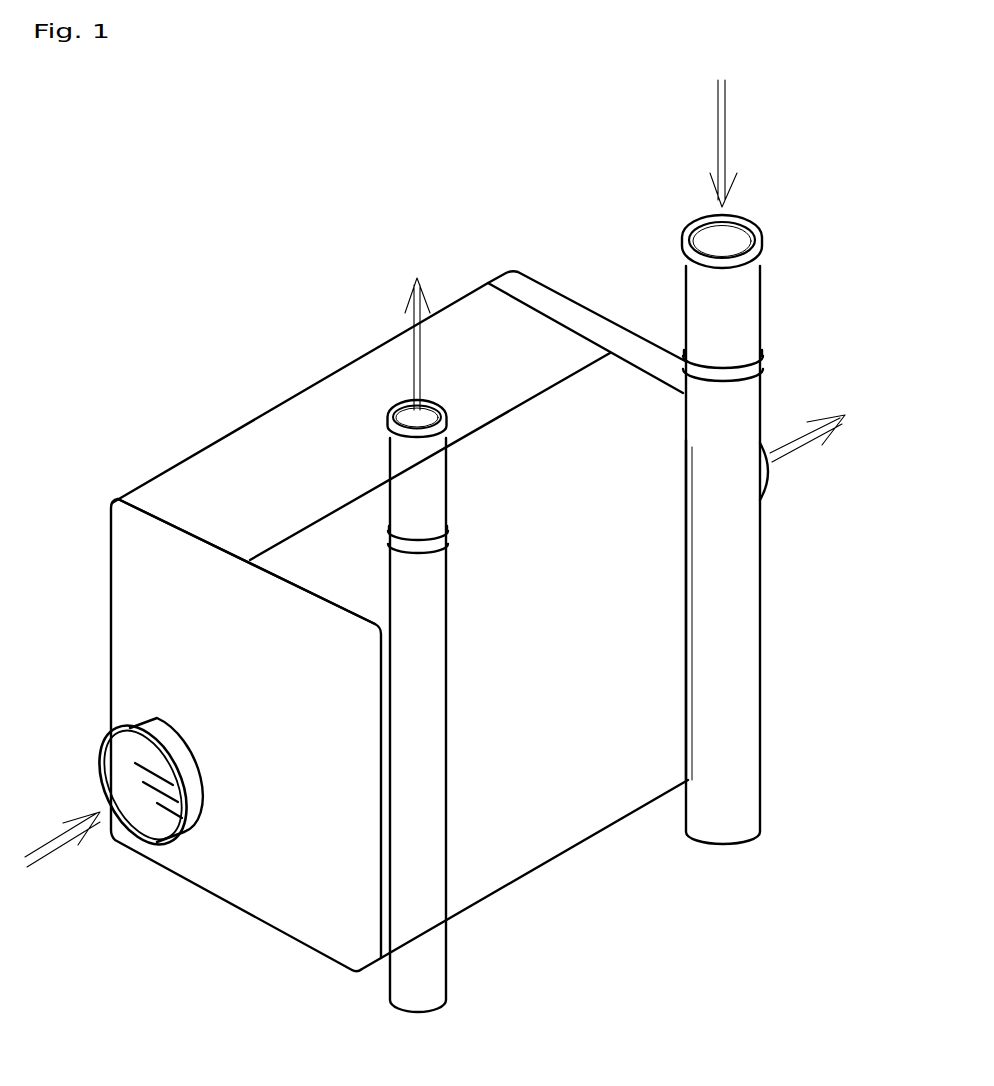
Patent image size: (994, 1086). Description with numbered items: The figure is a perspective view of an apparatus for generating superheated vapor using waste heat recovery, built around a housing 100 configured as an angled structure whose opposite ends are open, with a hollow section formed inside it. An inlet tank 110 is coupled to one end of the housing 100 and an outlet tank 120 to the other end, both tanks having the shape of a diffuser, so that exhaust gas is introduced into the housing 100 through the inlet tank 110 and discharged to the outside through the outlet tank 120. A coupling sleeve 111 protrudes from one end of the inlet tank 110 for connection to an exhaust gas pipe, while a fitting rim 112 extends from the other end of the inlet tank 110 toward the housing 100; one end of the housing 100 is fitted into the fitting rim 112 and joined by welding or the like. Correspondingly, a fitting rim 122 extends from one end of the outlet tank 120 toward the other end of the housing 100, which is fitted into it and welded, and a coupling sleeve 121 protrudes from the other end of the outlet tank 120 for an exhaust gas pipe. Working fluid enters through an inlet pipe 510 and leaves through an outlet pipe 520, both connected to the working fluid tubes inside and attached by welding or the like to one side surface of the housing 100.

The housing 100 is at (327, 371).
The inlet tank 110 is at (214, 905).
The coupling sleeve 111 is at (141, 720).
The fitting rim 112 is at (172, 515).
The outlet tank 120 is at (602, 311).
The coupling sleeve 121 is at (768, 474).
The fitting rim 122 is at (528, 290).
The inlet pipe 510 is at (752, 775).
The outlet pipe 520 is at (438, 963).